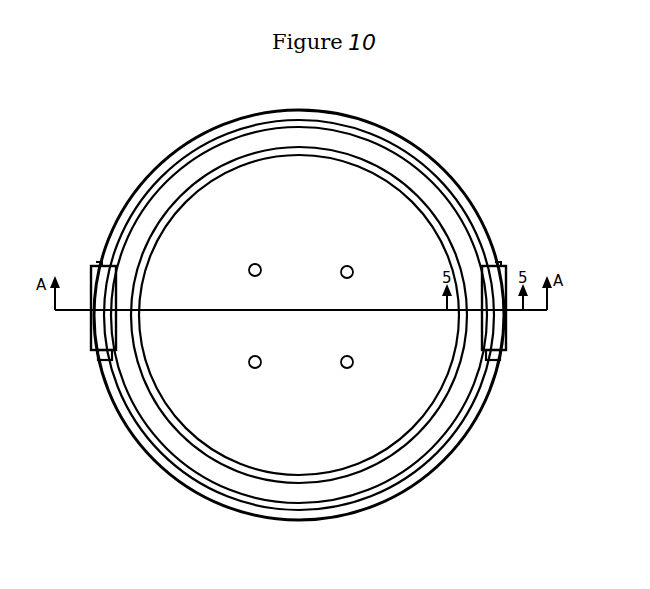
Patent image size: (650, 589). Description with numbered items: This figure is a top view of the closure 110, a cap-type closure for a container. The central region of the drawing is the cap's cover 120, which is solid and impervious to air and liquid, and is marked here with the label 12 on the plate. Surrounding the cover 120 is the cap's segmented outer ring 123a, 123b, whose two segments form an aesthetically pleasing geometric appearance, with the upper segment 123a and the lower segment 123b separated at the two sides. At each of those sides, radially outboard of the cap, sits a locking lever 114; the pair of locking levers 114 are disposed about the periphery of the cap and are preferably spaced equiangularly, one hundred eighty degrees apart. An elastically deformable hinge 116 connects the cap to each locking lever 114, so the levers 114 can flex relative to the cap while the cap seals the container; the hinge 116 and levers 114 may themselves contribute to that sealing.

The closure 110 is at (486, 178).
The central plate 12 is at (302, 224).
The locking lever 114 is at (80, 329).
The elastically deformable hinge 116 is at (103, 356).
The cover 120 is at (418, 419).
The segmented outer ring 123a is at (193, 145).
The segmented outer ring 123b is at (420, 482).